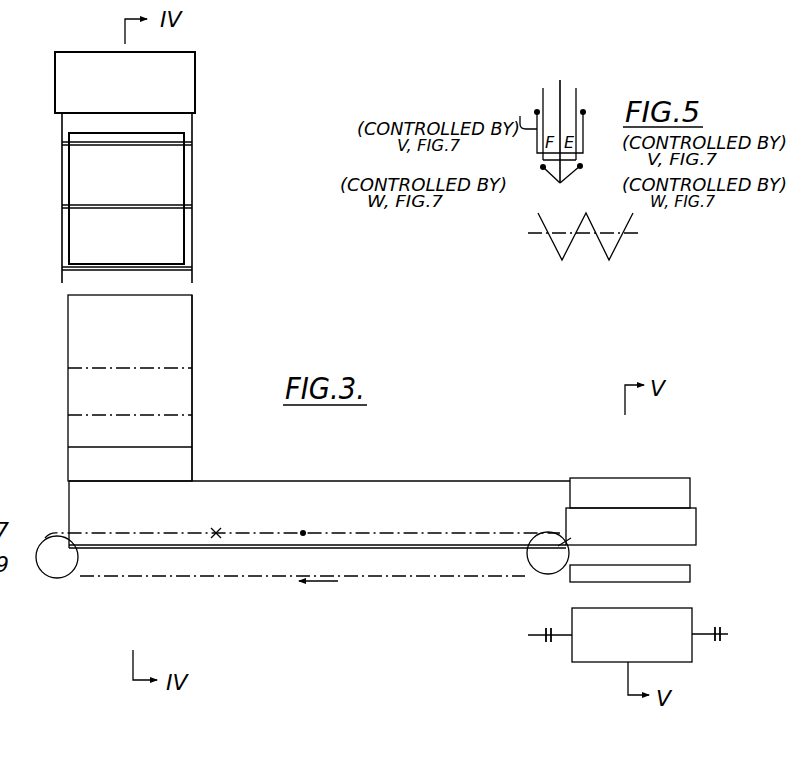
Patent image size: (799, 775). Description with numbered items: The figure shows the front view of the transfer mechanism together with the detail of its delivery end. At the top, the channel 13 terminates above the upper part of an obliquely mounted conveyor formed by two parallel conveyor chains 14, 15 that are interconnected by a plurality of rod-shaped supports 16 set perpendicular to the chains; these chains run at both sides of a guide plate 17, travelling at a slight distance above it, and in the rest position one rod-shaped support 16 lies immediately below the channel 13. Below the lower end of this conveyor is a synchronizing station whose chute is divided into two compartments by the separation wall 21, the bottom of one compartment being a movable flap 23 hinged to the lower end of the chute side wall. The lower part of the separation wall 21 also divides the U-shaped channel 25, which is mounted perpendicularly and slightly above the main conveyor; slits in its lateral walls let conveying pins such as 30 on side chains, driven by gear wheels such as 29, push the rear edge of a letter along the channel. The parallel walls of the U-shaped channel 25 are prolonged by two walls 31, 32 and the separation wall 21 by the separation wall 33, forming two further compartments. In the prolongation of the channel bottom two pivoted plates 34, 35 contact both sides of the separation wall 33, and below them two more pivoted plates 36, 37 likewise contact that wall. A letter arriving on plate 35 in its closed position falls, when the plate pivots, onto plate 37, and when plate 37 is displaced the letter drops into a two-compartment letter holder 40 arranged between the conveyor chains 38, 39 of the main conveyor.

In FIG. 3, the channel 13 is at (185, 77).
In FIG. 3, the conveyor chain 14 is at (62, 178).
In FIG. 3, the conveyor chain 15 is at (192, 178).
In FIG. 3, the rod-shaped support 16 is at (100, 145).
In FIG. 3, the guide plate 17 is at (142, 196).
In FIG. 3, the separation wall 21 is at (193, 465).
In FIG. 3, the movable flap 23 is at (130, 388).
In FIG. 3, the U-shaped channel 25 is at (385, 481).
In FIG. 3, the gear wheel 29 is at (53, 569).
In FIG. 3, the conveying pin 30 is at (323, 520).
In FIG. 5, the parallel wall 31 is at (543, 98).
In FIG. 3, the parallel wall 32 is at (630, 493).
In FIG. 5, the parallel wall 32 is at (577, 92).
In FIG. 5, the separation wall 33 is at (575, 120).
In FIG. 3, the pivoted plate 34 is at (631, 526).
In FIG. 5, the pivoted plate 34 is at (583, 133).
In FIG. 5, the pivoted plate 35 is at (486, 107).
In FIG. 3, the pivoted plate 36 is at (625, 572).
In FIG. 5, the pivoted plate 36 is at (580, 166).
In FIG. 5, the pivoted plate 37 is at (543, 168).
In FIG. 3, the conveyor chain 38 is at (534, 636).
In FIG. 3, the conveyor chain 39 is at (726, 635).
In FIG. 3, the letter holder 40 is at (632, 635).
In FIG. 5, the letter holder 40 is at (617, 242).